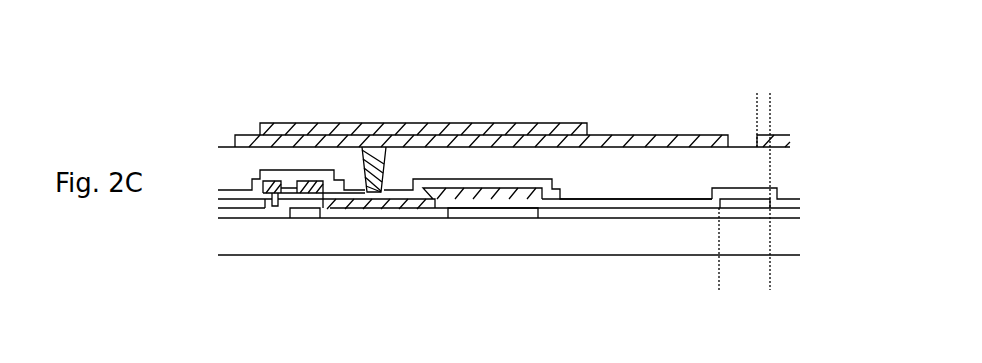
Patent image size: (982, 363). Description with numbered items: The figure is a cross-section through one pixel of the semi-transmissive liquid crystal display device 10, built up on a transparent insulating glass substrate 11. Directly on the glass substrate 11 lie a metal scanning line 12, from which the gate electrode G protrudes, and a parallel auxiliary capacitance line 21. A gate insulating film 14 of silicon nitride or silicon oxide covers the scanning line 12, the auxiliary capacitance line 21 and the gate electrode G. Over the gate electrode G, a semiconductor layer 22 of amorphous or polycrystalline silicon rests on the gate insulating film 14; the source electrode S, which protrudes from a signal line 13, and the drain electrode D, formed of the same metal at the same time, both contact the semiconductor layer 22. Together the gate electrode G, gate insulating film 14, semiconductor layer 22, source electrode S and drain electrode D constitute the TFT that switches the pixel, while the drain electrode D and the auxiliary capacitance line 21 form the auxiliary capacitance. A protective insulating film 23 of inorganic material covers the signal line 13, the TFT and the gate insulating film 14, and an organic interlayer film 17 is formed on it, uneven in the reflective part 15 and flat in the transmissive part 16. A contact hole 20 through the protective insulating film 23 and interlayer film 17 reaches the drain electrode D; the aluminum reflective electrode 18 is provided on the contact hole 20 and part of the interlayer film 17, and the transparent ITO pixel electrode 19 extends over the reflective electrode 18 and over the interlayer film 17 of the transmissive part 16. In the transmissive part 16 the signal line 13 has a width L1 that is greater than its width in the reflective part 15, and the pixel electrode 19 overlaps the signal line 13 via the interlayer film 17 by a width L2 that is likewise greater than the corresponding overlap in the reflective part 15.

The semi-transmissive liquid crystal display device 10 is at (236, 61).
The glass substrate 11 is at (568, 238).
The scanning line 12 is at (237, 212).
The signal line 13 is at (753, 204).
The gate insulating film 14 is at (783, 209).
The reflective part 15 is at (318, 120).
The transmissive part 16 is at (666, 133).
The interlayer film 17 is at (645, 186).
The reflective electrode 18 is at (476, 123).
The pixel electrode 19 is at (518, 141).
The contact hole 20 is at (366, 123).
The auxiliary capacitance line 21 is at (480, 212).
The semiconductor layer 22 is at (315, 196).
The protective insulating film 23 is at (780, 202).
The source electrode S is at (282, 196).
The gate electrode G is at (302, 217).
The drain electrode D is at (350, 199).
The thin film transistor TFT is at (371, 289).
The width of the signal line in the transmissive part L1 is at (690, 280).
The width of the overlapping portion of the pixel electrode and signal line at the t L2 is at (779, 106).